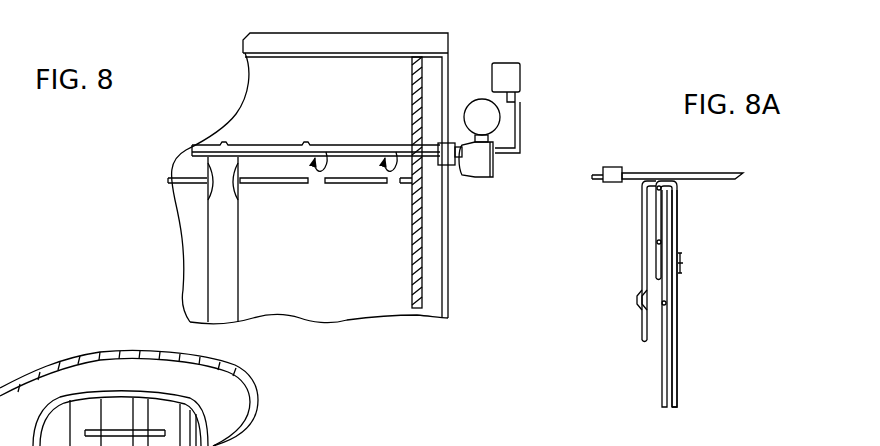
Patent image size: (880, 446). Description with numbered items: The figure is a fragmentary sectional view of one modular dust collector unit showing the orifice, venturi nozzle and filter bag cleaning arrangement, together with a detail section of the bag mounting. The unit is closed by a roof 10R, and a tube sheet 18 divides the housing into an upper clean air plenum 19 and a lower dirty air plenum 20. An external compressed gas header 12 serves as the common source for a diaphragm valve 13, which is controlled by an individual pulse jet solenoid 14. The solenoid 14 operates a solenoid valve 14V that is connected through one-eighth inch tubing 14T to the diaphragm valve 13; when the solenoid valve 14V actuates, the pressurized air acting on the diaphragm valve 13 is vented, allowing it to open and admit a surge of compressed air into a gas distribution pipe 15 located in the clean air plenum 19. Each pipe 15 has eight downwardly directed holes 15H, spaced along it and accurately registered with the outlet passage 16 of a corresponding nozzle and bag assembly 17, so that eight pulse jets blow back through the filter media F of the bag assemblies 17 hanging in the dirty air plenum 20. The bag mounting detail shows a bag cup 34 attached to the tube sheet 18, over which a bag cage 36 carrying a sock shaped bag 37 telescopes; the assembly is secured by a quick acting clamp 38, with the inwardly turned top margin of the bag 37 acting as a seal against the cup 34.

In FIG. 8, the roof 10R is at (341, 48).
In FIG. 8, the compressed gas header 12 is at (477, 110).
In FIG. 8, the diaphragm valve 13 is at (482, 172).
In FIG. 8, the pulse jet solenoid 14 is at (559, 97).
In FIG. 8, the solenoid valve 14V is at (507, 82).
In FIG. 8, the tubing 14T is at (517, 137).
In FIG. 8, the gas distribution pipe 15 is at (277, 123).
In FIG. 8, the holes 15H is at (373, 146).
In FIG. 8, the outlet passage 16 is at (210, 186).
In FIG. 8, the bag assembly 17 is at (202, 248).
In FIG. 8, the tube sheet 18 is at (178, 152).
In FIG. 8A, the tube sheet 18 is at (675, 172).
In FIG. 8, the clean air plenum 19 is at (292, 80).
In FIG. 8, the dirty air plenum 20 is at (336, 275).
In FIG. 8, the filter media F is at (228, 262).
In FIG. 8A, the bag cup 34 is at (642, 232).
In FIG. 8A, the bag cage 36 is at (661, 370).
In FIG. 8A, the bag 37 is at (677, 345).
In FIG. 8A, the quick acting clamp 38 is at (682, 266).